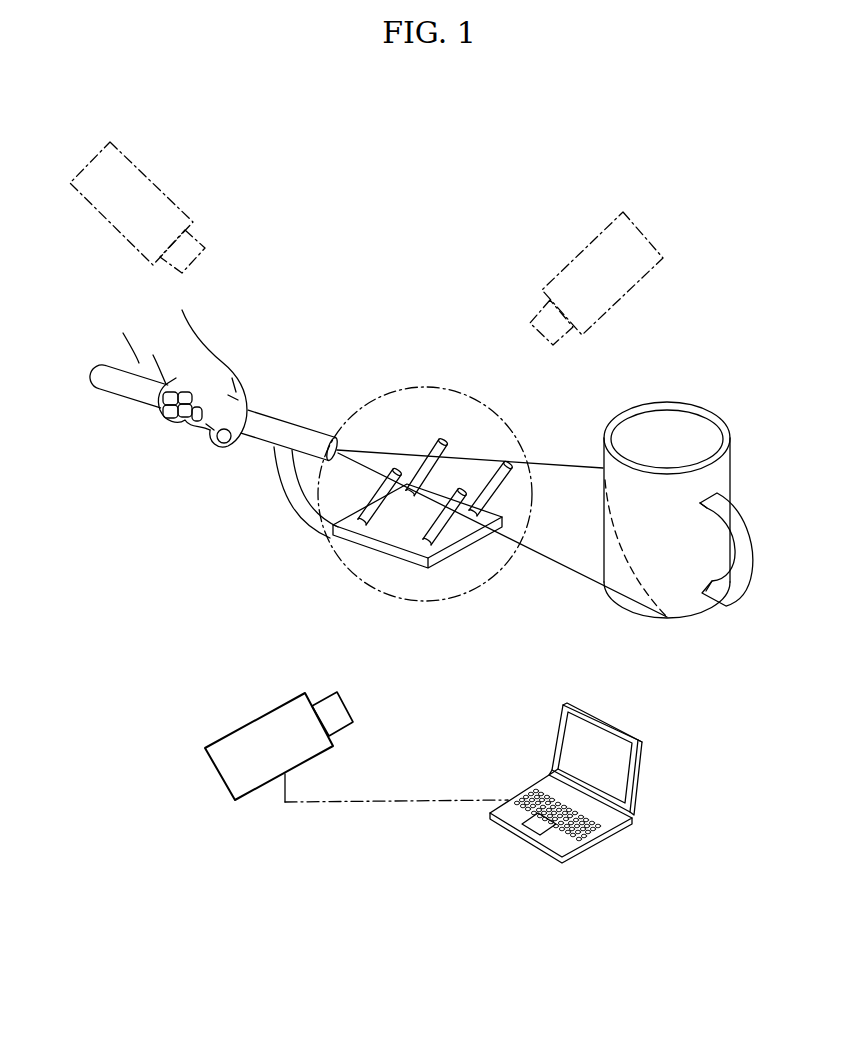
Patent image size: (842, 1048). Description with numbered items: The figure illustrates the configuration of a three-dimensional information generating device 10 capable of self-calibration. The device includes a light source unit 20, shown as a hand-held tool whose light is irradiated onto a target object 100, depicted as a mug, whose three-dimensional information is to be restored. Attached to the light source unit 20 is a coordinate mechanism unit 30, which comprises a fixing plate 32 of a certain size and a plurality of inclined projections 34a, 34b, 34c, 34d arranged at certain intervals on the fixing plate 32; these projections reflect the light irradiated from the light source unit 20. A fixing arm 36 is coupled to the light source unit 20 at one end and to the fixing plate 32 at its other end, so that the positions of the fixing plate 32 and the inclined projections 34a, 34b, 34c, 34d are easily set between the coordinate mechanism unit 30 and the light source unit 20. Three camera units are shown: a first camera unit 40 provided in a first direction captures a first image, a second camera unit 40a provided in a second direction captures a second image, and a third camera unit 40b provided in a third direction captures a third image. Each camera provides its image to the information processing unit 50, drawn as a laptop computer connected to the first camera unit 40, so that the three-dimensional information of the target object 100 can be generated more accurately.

The 3D information generating device 10 is at (442, 184).
The light source unit 20 is at (283, 430).
The coordinate mechanism unit 30 is at (392, 488).
The fixing plate 32 is at (447, 553).
The inclined projection 34a is at (397, 466).
The inclined projection 34b is at (443, 436).
The inclined projection 34c is at (508, 459).
The inclined projection 34d is at (426, 548).
The fixing arm 36 is at (292, 477).
The camera unit 40 is at (255, 720).
The second camera unit 40a is at (162, 190).
The third camera unit 40b is at (590, 243).
The information processing unit 50 is at (620, 821).
The target object 100 is at (690, 403).